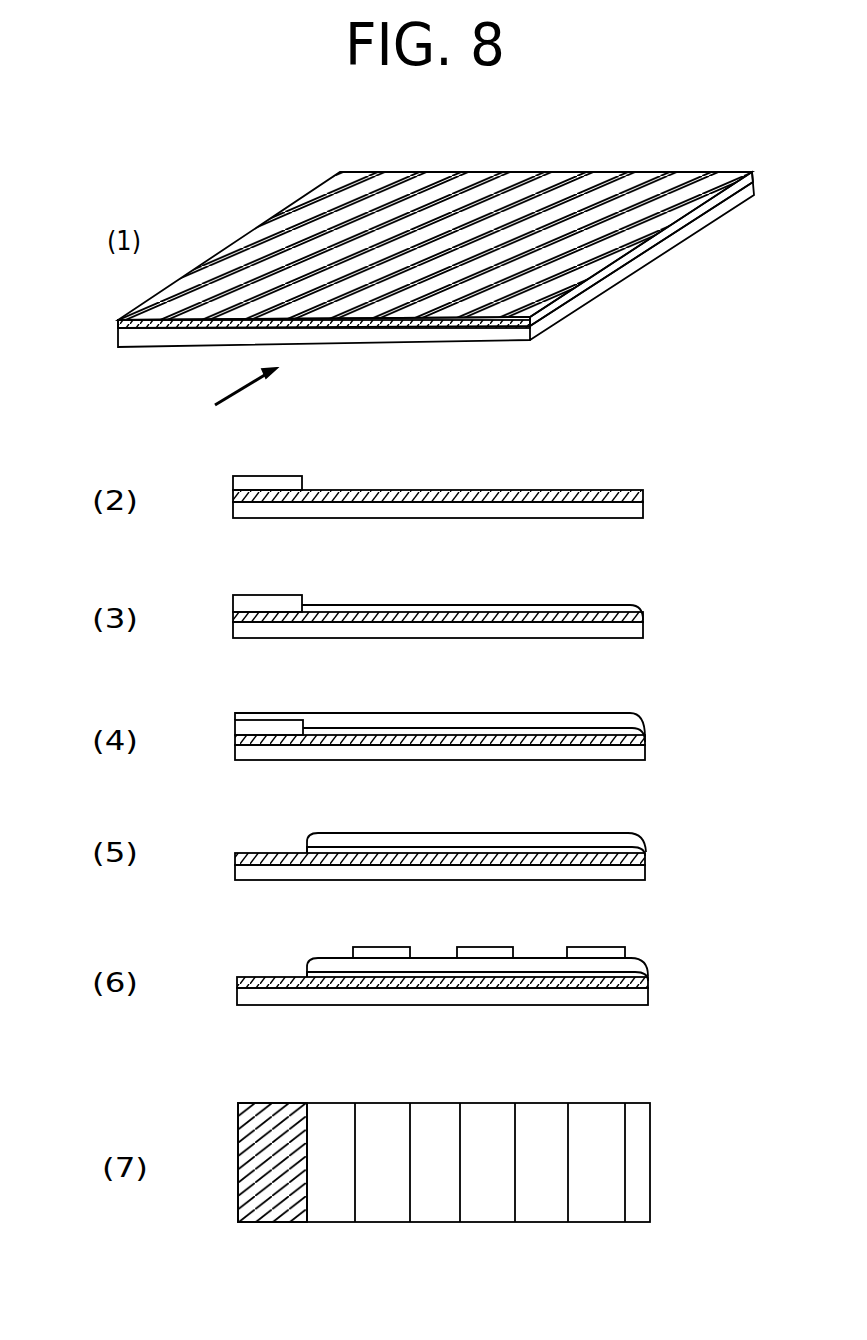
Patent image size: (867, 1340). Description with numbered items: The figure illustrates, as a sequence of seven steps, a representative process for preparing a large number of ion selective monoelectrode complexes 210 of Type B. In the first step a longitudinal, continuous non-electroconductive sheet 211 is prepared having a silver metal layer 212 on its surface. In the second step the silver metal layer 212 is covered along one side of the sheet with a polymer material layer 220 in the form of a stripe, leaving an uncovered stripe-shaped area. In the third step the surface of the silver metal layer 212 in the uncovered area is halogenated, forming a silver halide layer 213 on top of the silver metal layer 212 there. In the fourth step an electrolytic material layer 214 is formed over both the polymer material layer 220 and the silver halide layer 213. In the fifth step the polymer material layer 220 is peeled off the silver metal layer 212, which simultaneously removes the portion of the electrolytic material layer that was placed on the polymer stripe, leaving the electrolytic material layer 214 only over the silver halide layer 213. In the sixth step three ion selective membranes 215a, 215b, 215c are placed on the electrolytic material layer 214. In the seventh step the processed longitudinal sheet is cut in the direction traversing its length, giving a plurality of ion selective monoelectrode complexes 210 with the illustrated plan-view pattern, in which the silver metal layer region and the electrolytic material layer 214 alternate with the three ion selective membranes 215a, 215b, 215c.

The ion selective monoelectrode complex 210 is at (296, 853).
The non-electroconductive sheet 211 is at (590, 293).
The silver metal layer 212 is at (640, 243).
The silver halide layer 213 is at (623, 607).
The electrolytic material layer 214 is at (623, 720).
The ion selective membrane 215a is at (368, 945).
The ion selective membrane 215b is at (473, 945).
The ion selective membrane 215c is at (587, 945).
The polymer material layer 220 is at (277, 475).